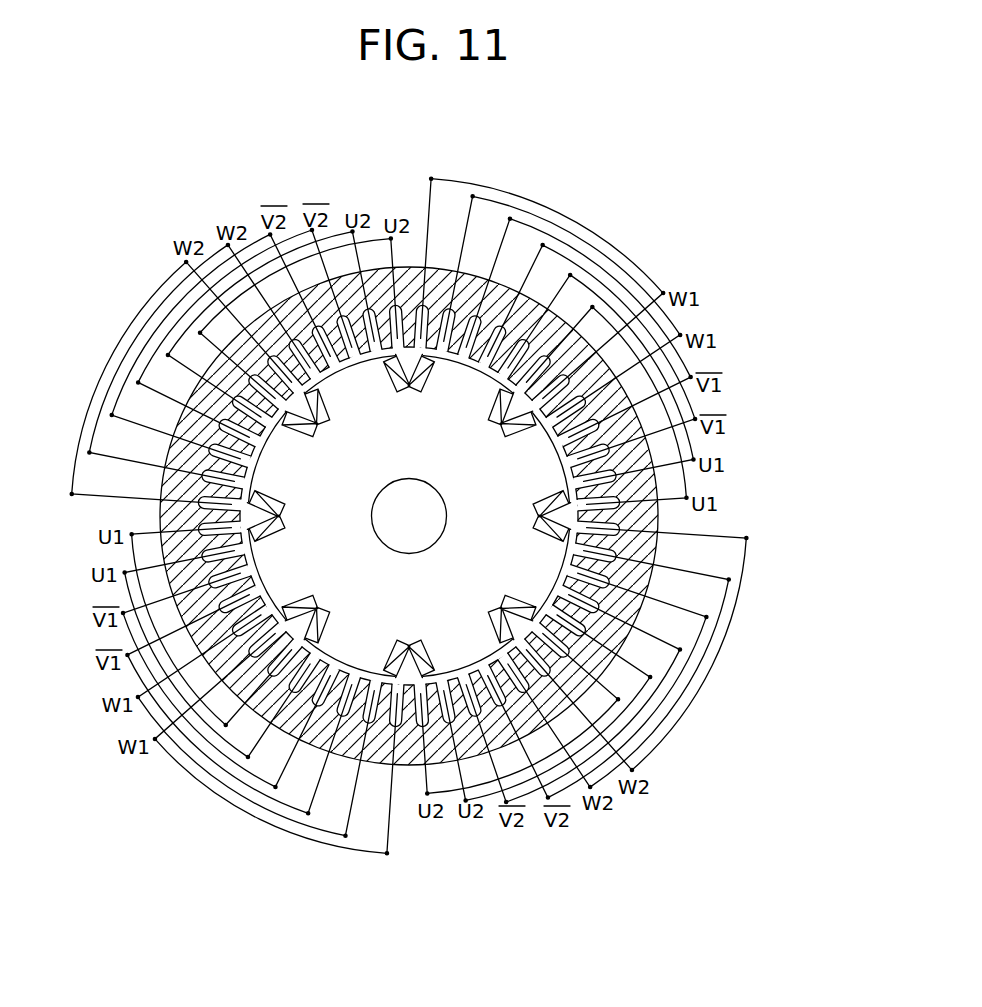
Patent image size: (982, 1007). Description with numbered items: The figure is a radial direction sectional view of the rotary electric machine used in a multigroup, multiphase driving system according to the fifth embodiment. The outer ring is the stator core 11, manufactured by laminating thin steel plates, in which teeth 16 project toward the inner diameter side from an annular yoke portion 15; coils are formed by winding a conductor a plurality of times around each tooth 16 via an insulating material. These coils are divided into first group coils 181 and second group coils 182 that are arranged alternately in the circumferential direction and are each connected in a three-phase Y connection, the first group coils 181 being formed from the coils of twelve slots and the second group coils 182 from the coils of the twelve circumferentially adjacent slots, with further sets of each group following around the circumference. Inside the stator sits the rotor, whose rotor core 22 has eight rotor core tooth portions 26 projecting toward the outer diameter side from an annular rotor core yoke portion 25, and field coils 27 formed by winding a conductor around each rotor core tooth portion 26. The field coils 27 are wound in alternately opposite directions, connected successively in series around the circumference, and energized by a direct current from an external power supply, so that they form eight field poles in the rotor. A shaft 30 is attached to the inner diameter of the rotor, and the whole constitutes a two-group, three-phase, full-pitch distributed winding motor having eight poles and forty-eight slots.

The stator core 11 is at (799, 497).
The yoke portion 15 is at (660, 532).
The teeth 16 is at (653, 527).
The rotor core 22 is at (540, 515).
The rotor core yoke portion 25 is at (502, 487).
The rotor core tooth portions 26 is at (558, 475).
The field coils 27 is at (592, 307).
The shaft 30 is at (418, 528).
The first group coils 181 is at (602, 236).
The second group coils 182 is at (164, 289).